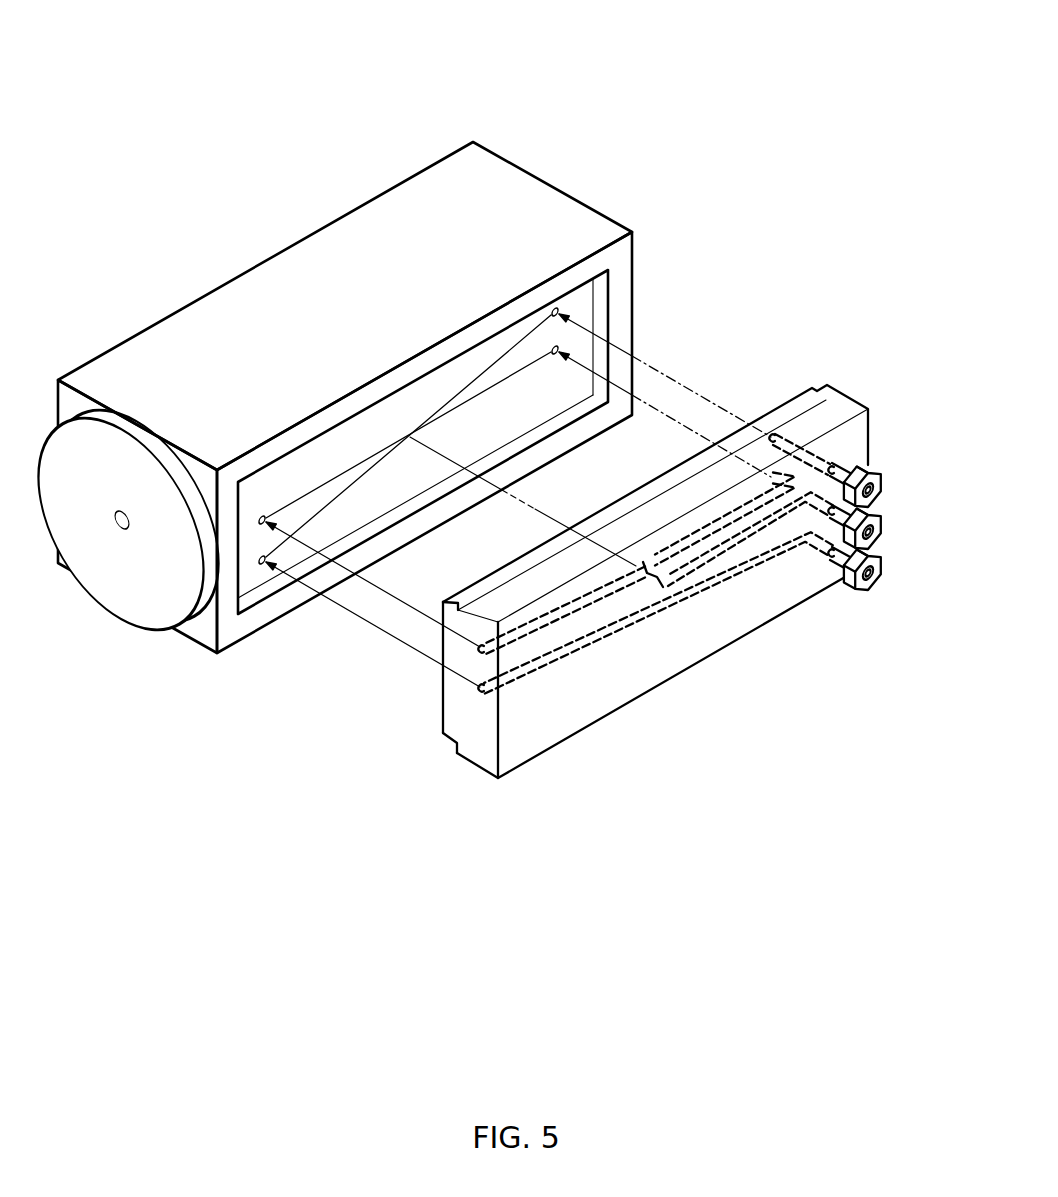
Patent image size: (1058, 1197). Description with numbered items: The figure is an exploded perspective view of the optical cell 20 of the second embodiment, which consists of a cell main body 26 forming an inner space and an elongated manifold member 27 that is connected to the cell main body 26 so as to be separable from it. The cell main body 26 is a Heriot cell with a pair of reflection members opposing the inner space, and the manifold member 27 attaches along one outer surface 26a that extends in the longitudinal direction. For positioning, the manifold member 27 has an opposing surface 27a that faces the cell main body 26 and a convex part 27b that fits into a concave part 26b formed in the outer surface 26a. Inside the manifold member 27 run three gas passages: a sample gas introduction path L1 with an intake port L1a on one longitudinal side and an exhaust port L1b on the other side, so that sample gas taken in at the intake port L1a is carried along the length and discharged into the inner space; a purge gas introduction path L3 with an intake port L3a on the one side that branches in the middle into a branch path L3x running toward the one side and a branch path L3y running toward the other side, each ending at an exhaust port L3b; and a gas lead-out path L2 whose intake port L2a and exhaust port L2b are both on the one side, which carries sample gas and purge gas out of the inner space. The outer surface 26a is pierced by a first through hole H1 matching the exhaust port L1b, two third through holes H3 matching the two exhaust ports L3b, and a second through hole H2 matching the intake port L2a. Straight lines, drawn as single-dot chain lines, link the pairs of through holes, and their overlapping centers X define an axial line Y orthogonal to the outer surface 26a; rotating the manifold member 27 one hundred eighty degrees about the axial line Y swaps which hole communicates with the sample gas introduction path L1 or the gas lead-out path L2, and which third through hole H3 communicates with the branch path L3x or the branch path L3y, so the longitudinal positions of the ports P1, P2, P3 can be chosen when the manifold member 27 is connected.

The optical cell 20 is at (668, 92).
The cell main body 26 is at (557, 189).
The outer surface 26a is at (623, 310).
The concave part 26b is at (507, 455).
The manifold member 27 is at (830, 384).
The opposing surface 27a is at (464, 762).
The convex part 27b is at (443, 731).
The first through hole H1 is at (262, 567).
The second through hole H2 is at (553, 308).
The third through holes H3 is at (555, 356).
The centers X is at (410, 439).
The axial line Y is at (447, 451).
The sample gas introduction path L1 is at (655, 628).
The intake port L1a is at (832, 561).
The exhaust port L1b is at (478, 688).
The gas lead-out path L2 is at (797, 432).
The intake port L2a is at (773, 432).
The exhaust port L2b is at (846, 462).
The purge gas introduction path L3 is at (744, 568).
The intake port L3a is at (830, 516).
The exhaust ports L3b is at (768, 477).
The branch path L3x is at (680, 546).
The branch path L3y is at (573, 603).
The port P1 is at (888, 564).
The port P2 is at (888, 479).
The port P3 is at (888, 521).